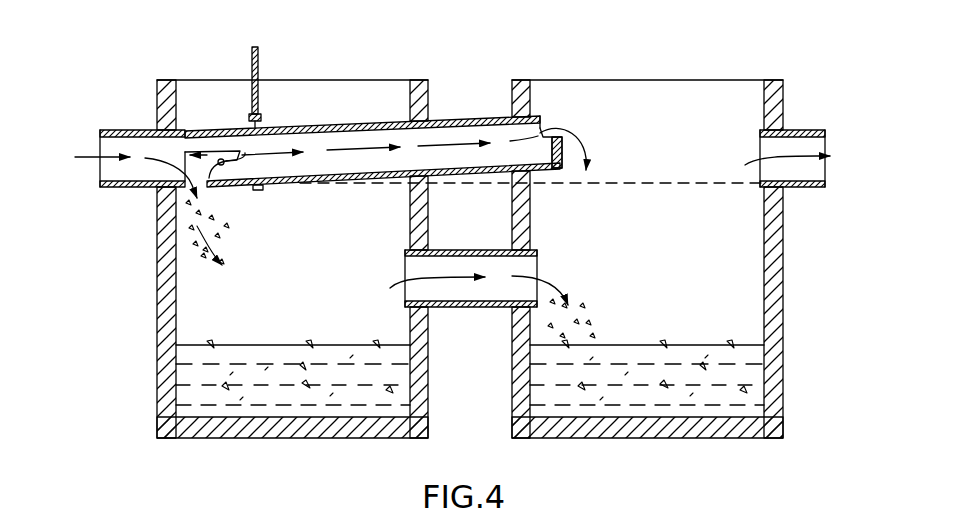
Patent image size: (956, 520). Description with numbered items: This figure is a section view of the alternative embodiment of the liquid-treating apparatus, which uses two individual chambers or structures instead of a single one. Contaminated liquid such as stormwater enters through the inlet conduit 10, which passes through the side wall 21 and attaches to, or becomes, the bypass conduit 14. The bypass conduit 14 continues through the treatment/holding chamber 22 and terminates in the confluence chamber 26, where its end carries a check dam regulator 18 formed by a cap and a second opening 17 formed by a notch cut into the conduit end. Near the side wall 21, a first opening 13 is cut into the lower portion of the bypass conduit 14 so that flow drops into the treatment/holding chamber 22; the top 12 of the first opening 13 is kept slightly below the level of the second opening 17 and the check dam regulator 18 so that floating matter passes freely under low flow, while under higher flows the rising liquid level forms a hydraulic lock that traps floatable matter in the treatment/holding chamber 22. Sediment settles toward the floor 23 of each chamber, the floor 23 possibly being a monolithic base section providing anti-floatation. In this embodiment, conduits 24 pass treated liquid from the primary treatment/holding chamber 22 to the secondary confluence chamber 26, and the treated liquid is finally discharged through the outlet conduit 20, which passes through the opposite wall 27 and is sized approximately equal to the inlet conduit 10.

The inlet conduit 10 is at (133, 130).
The top of the first opening 12 is at (207, 150).
The first opening 13 is at (222, 166).
The bypass conduit 14 is at (332, 126).
The second opening 17 is at (540, 128).
The check dam regulator 18 is at (563, 155).
The outlet conduit 20 is at (797, 188).
The side wall 21 is at (157, 293).
The treatment/holding chamber 22 is at (321, 247).
The floor 23 is at (276, 417).
The conduits 24 is at (475, 307).
The confluence chamber 26 is at (646, 257).
The opposite wall 27 is at (785, 406).